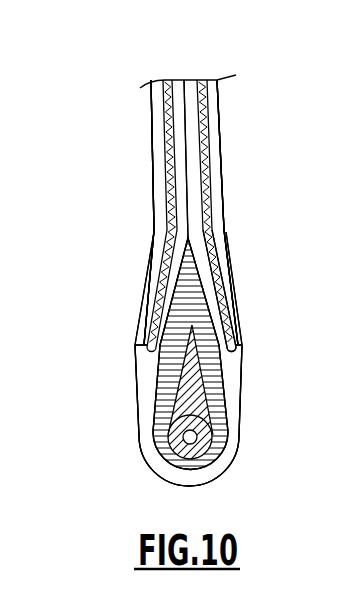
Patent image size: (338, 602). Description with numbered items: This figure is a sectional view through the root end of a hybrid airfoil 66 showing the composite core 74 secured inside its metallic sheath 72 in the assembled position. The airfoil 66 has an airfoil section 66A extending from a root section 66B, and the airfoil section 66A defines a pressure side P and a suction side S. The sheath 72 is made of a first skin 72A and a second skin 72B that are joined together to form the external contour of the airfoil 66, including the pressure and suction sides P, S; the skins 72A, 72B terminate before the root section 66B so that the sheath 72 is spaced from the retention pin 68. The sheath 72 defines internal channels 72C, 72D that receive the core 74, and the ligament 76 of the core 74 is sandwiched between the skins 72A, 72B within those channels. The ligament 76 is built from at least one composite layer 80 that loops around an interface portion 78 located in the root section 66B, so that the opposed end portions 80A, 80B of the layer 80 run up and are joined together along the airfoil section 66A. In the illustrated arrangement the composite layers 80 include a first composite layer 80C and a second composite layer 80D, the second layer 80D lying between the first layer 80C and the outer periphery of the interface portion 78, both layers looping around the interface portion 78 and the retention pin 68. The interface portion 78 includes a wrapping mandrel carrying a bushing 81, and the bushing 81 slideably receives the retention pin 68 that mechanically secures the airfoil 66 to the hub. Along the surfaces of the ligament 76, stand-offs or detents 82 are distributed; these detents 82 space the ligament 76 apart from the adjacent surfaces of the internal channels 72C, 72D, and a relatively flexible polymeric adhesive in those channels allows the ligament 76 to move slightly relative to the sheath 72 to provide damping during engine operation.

The airfoil 66 is at (136, 68).
The airfoil section 66A is at (136, 162).
The root section 66B is at (88, 440).
The retention pin 68 is at (183, 445).
The sheath 72 is at (155, 212).
The first skin 72A is at (149, 212).
The second skin 72B is at (225, 232).
The internal channel 72C is at (190, 272).
The internal channel 72D is at (186, 159).
The composite core 74 is at (213, 332).
The ligament 76 is at (134, 388).
The interface portion 78 is at (218, 403).
The composite layer 80 is at (147, 432).
The end portion 80A is at (177, 88).
The end portion 80B is at (190, 90).
The first composite layer 80C is at (213, 330).
The second composite layer 80D is at (208, 352).
The bushing 81 is at (218, 458).
The detent 82 is at (208, 197).
The pressure side P is at (150, 118).
The suction side S is at (222, 130).